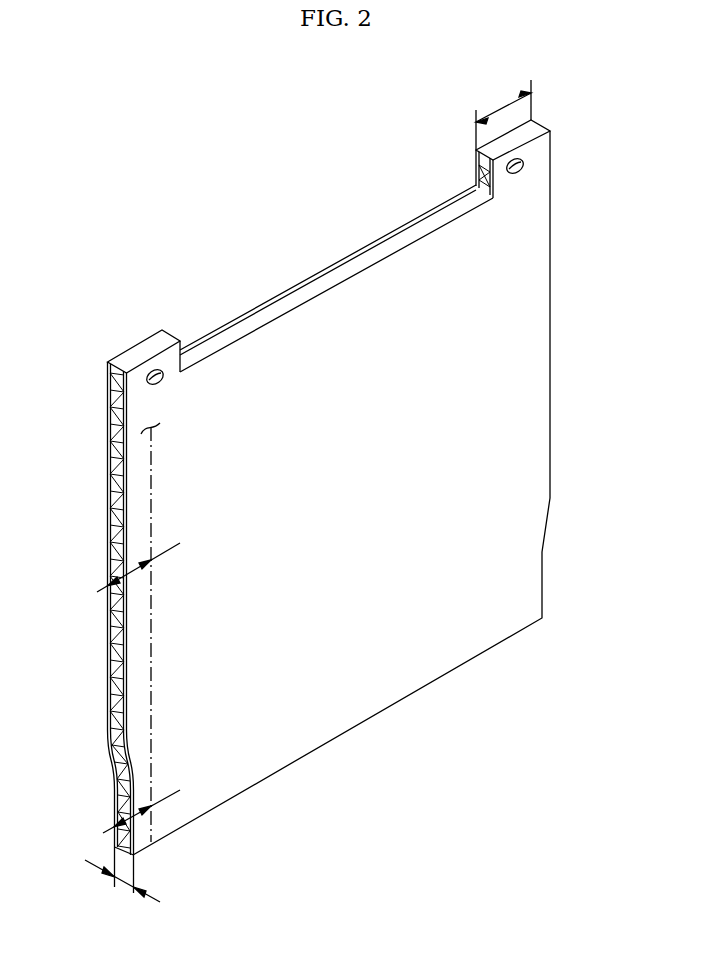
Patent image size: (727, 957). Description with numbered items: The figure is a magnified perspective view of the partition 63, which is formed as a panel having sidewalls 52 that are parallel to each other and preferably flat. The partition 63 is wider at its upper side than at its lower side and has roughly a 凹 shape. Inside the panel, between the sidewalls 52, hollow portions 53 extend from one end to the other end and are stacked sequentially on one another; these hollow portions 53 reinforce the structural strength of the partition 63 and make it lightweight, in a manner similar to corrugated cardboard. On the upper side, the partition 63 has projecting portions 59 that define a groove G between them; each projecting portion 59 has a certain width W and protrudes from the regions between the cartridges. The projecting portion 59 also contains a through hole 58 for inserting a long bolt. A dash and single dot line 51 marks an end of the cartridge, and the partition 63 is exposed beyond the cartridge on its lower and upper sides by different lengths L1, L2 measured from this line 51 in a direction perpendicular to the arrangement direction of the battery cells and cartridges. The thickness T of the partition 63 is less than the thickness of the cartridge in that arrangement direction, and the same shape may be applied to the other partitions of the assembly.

The partition 63 is at (147, 115).
The sidewall 52 is at (516, 375).
The hollow portion 53 is at (110, 415).
The projecting portion 59 is at (180, 340).
The through hole 58 is at (525, 168).
The dash and single dot line 51 is at (152, 658).
The groove G is at (325, 255).
The width W is at (503, 113).
The thickness T is at (122, 885).
The length L1 is at (151, 799).
The length L2 is at (148, 557).